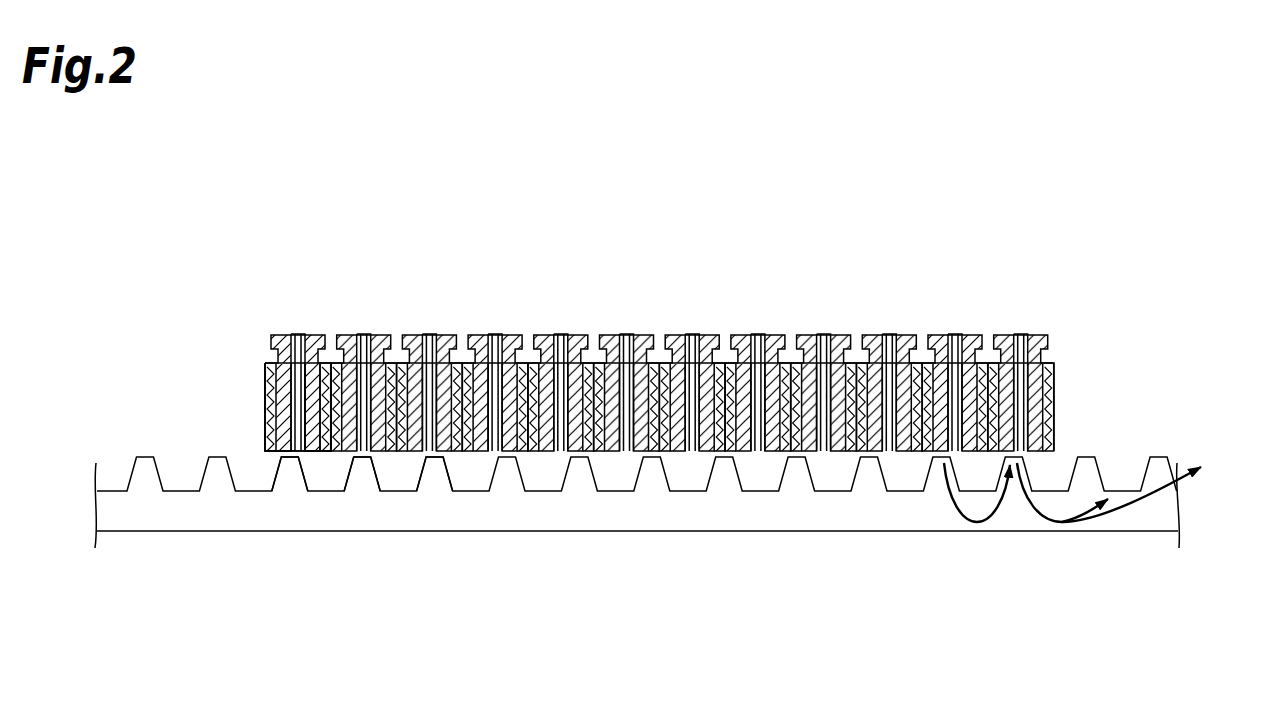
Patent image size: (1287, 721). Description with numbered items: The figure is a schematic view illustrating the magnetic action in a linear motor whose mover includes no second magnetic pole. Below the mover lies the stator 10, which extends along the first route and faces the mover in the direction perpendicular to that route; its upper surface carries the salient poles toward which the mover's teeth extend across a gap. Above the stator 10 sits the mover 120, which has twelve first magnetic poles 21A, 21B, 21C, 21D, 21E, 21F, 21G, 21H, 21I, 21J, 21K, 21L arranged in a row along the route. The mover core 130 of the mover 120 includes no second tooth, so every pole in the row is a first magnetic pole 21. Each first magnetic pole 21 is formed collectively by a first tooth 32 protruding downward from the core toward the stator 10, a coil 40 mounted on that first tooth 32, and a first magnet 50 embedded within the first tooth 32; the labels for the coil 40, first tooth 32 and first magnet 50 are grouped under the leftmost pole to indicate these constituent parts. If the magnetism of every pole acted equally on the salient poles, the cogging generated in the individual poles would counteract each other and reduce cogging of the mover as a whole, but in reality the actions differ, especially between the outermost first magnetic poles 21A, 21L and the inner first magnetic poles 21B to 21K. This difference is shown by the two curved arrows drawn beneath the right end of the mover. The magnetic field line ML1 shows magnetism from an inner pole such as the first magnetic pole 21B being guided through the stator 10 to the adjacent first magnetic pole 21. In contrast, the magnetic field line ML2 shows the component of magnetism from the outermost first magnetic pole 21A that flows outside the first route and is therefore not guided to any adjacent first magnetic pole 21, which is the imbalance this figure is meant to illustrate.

The stator 10 is at (1192, 503).
The first magnetic pole 21 is at (352, 599).
The first magnetic pole 21A is at (1021, 329).
The first magnetic pole 21B is at (955, 329).
The first magnetic pole 21C is at (889, 329).
The first magnetic pole 21D is at (824, 329).
The first magnetic pole 21E is at (758, 329).
The first magnetic pole 21F is at (692, 329).
The first magnetic pole 21G is at (627, 329).
The first magnetic pole 21H is at (561, 329).
The first magnetic pole 21I is at (495, 329).
The first magnetic pole 21J is at (429, 329).
The first magnetic pole 21K is at (364, 329).
The first magnetic pole 21L is at (298, 329).
The first tooth 32 is at (288, 438).
The coil 40 is at (288, 437).
The first magnet 50 is at (313, 437).
The mover 120 is at (1082, 366).
The mover core 130 is at (259, 328).
The magnetic field line ML1 is at (975, 524).
The magnetic field line ML2 is at (1062, 524).